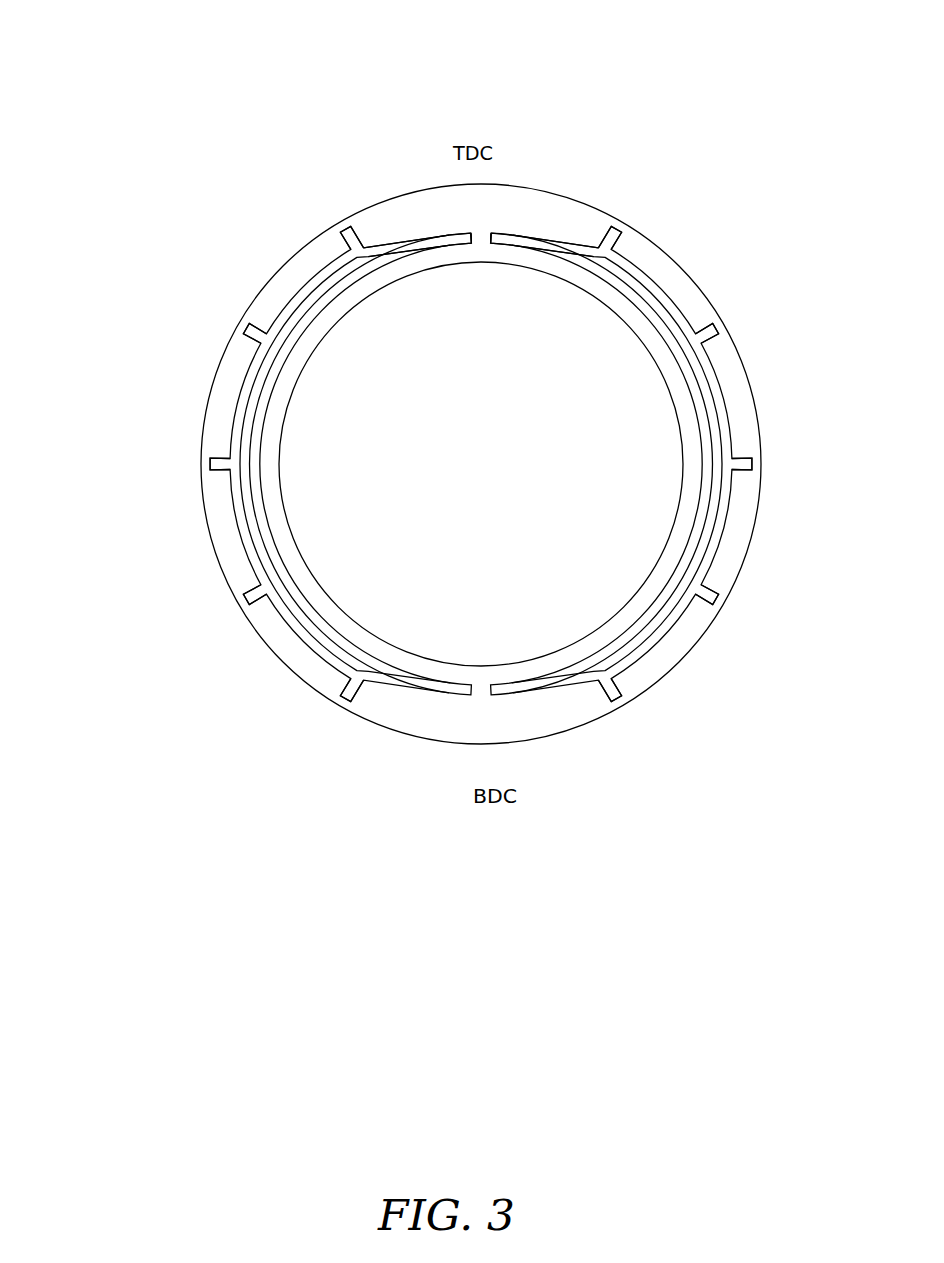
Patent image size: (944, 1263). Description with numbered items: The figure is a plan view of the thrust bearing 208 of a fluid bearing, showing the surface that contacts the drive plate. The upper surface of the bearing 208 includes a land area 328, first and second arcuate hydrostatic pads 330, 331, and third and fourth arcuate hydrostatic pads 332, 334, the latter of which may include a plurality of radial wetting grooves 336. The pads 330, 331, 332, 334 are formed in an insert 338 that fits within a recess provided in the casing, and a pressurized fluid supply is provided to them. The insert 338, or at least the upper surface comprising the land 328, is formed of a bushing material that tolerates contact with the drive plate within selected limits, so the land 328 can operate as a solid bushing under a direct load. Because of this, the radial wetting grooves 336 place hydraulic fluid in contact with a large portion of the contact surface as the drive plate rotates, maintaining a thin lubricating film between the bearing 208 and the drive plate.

The thrust bearing 208 is at (177, 78).
The land area 328 is at (500, 739).
The first arcuate hydrostatic pad 330 is at (412, 247).
The second arcuate hydrostatic pad 331 is at (556, 240).
The third arcuate hydrostatic pad 332 is at (665, 288).
The fourth arcuate hydrostatic pad 334 is at (306, 280).
The radial wetting grooves 336 is at (720, 342).
The insert 338 is at (487, 205).